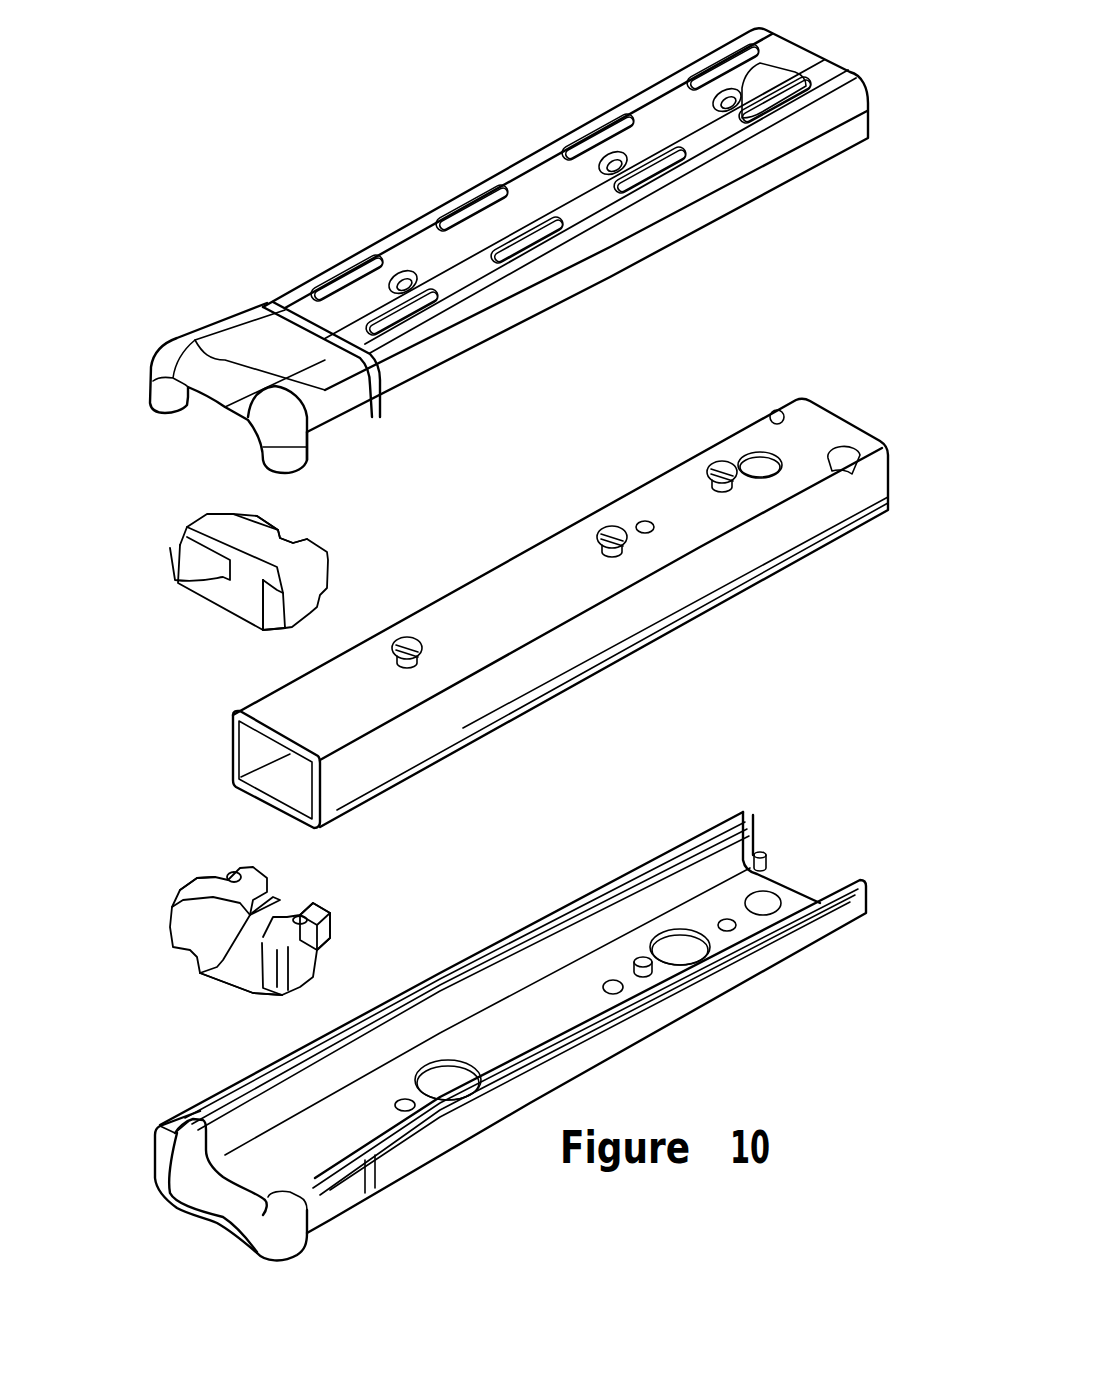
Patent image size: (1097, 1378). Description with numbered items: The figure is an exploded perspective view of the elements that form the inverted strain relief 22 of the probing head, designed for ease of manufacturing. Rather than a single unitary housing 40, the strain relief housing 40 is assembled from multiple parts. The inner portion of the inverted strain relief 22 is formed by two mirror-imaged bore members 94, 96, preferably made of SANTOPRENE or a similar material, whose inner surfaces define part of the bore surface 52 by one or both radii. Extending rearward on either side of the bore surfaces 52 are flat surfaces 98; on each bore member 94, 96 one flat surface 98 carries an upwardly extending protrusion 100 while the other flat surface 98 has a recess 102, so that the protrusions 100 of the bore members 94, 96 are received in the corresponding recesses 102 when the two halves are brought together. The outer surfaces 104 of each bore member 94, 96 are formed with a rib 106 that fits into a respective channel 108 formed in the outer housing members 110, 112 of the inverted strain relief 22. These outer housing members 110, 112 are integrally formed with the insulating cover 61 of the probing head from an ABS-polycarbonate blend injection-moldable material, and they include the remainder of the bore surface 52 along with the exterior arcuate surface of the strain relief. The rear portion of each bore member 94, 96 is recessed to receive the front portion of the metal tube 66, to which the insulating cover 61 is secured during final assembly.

The inverted strain relief 22 is at (86, 348).
The housing 40 is at (170, 340).
The bore surface 52 is at (187, 572).
The insulating cover 61 is at (827, 62).
The metal tube 66 is at (843, 416).
The bore member 94 is at (170, 548).
The bore member 96 is at (170, 925).
The flat surface 98 is at (197, 882).
The protrusion 100 is at (235, 870).
The recess 102 is at (300, 915).
The outer surface 104 is at (267, 597).
The rib 106 is at (272, 553).
The channel 108 is at (238, 1195).
The outer housing member 110 is at (227, 317).
The outer housing member 112 is at (340, 1223).